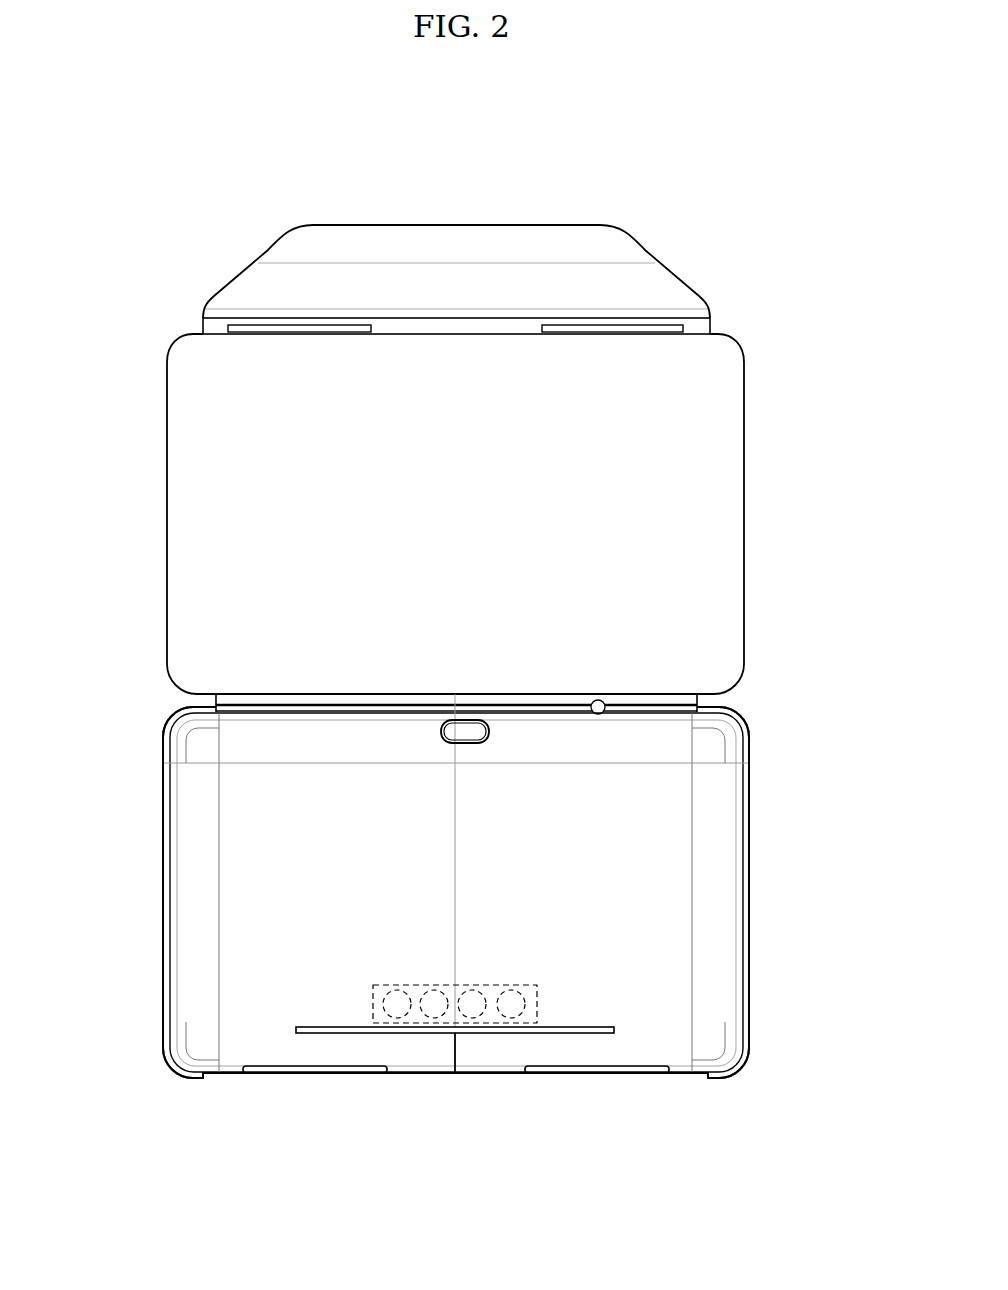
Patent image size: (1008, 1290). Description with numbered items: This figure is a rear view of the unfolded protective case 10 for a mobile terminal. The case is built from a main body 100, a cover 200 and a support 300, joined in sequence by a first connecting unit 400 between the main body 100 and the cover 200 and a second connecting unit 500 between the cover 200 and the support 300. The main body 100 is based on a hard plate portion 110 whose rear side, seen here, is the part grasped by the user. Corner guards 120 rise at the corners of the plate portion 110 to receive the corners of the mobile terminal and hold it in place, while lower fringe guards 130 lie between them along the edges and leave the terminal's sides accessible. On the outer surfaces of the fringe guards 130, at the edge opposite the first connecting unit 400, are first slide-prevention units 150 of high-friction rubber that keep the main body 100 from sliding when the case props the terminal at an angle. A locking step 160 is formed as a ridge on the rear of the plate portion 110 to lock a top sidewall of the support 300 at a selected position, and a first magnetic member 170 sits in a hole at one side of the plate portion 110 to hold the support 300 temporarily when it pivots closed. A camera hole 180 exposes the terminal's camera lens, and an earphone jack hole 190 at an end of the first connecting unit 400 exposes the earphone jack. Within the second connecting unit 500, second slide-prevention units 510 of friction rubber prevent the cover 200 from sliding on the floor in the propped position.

The protective case 10 is at (650, 154).
The main body 100 is at (775, 798).
The plate portion 110 is at (660, 973).
The corner guards 120 is at (166, 714).
The fringe guards 130 is at (160, 884).
The first slide-prevention unit 150 is at (312, 1076).
The locking step 160 is at (429, 1037).
The first magnetic member 170 is at (546, 1004).
The camera hole 180 is at (442, 744).
The earphone jack hole 190 is at (605, 695).
The cover 200 is at (758, 493).
The support 300 is at (683, 270).
The first connecting unit 400 is at (677, 700).
The second connecting unit 500 is at (701, 328).
The second slide-prevention units 510 is at (255, 327).